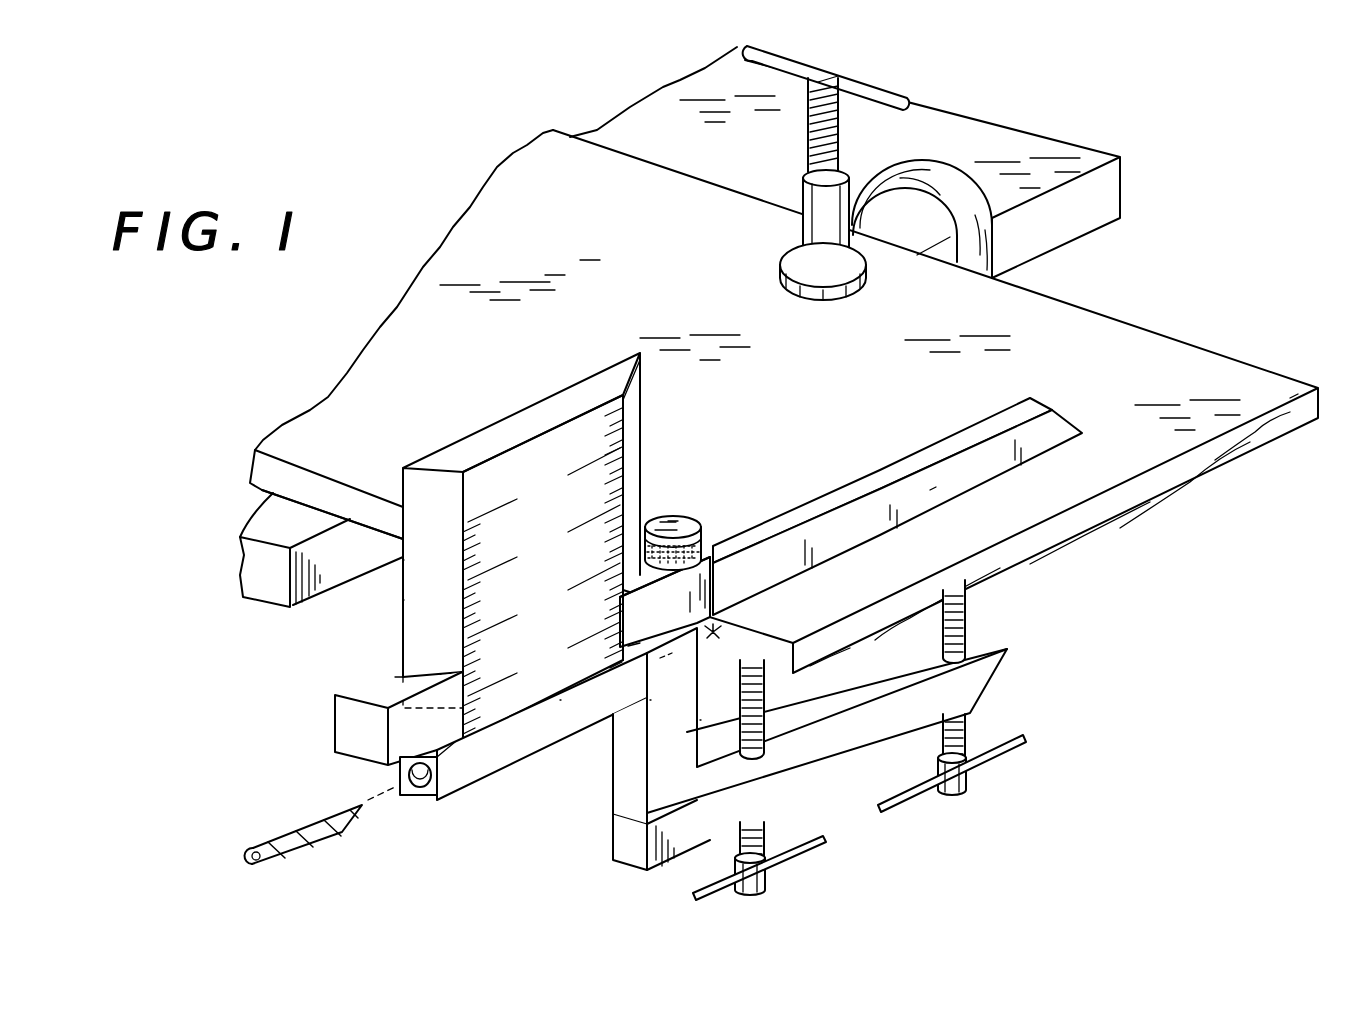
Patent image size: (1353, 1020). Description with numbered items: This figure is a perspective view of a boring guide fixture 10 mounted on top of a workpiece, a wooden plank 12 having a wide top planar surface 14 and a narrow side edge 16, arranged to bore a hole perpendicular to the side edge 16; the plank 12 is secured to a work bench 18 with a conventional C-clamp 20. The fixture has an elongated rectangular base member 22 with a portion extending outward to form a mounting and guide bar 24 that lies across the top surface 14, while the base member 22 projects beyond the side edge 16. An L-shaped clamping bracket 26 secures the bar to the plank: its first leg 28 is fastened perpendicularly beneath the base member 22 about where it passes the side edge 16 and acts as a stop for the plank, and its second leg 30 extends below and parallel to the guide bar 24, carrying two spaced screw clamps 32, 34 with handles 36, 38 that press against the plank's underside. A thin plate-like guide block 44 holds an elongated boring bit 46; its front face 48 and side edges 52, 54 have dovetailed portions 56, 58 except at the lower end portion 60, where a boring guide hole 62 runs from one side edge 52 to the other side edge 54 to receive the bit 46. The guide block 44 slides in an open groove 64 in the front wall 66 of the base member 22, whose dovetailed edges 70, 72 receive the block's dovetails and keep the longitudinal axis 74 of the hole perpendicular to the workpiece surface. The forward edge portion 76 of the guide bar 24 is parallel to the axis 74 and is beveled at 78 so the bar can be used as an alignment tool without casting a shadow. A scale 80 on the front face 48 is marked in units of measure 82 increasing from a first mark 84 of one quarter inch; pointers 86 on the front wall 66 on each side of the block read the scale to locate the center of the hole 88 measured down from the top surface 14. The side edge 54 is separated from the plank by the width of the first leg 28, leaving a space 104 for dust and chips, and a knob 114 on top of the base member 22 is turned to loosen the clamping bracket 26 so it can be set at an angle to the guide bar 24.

The boring guide fixture 10 is at (707, 459).
The wooden plank 12 is at (898, 370).
The top planar surface 14 is at (668, 185).
The side edge 16 is at (345, 498).
The work bench 18 is at (1064, 146).
The C-clamp 20 is at (938, 180).
The base member 22 is at (345, 694).
The mounting and guide bar 24 is at (836, 502).
The clamping bracket 26 is at (609, 797).
The first leg 28 is at (625, 740).
The second leg 30 is at (987, 669).
The screw clamp 32 is at (762, 686).
The screw clamp 34 is at (968, 620).
The handle 36 is at (804, 852).
The handle 38 is at (999, 753).
The guide block 44 is at (545, 410).
The boring bit 46 is at (287, 832).
The front face 48 is at (480, 470).
The side edge 52 is at (430, 797).
The side edge 54 is at (652, 700).
The dovetailed portion 56 is at (402, 583).
The dovetailed portion 58 is at (636, 444).
The lower end portion 60 is at (493, 752).
The boring guide hole 62 is at (418, 788).
The open groove 64 is at (396, 676).
The front wall 66 is at (710, 577).
The dovetailed edge 70 is at (437, 674).
The dovetailed edge 72 is at (657, 521).
The longitudinal axis 74 is at (670, 647).
The forward edge portion 76 is at (956, 488).
The bevel 78 is at (1050, 430).
The scale 80 is at (582, 494).
The units of measure 82 is at (458, 580).
The first mark 84 is at (584, 688).
The pointer 86 is at (639, 647).
The center of the hole 88 is at (719, 642).
The space 104 is at (718, 736).
The knob 114 is at (672, 520).